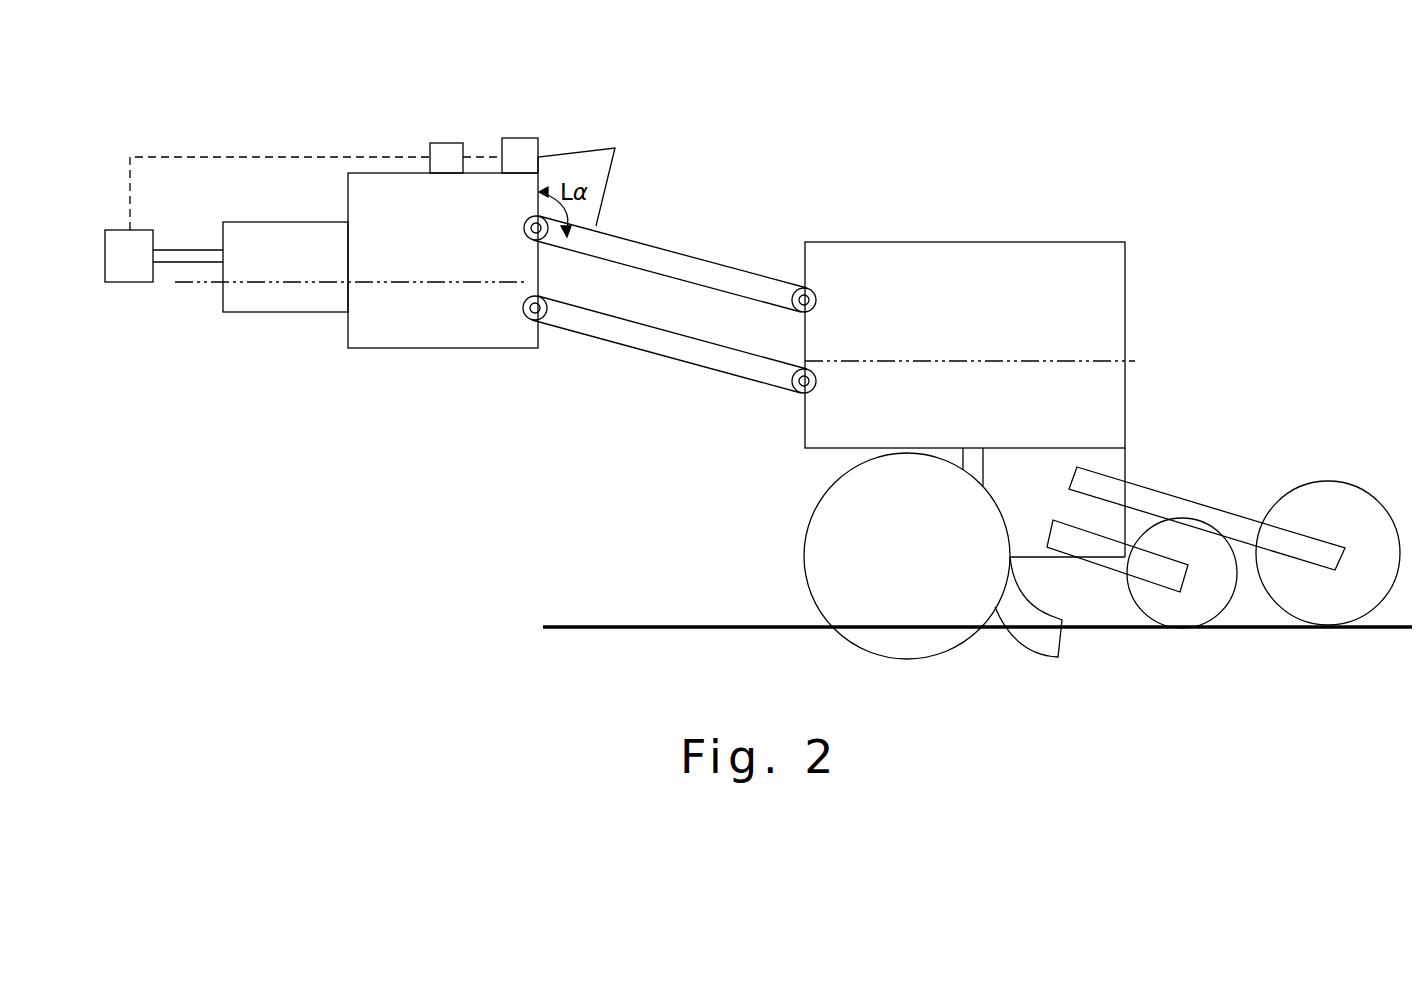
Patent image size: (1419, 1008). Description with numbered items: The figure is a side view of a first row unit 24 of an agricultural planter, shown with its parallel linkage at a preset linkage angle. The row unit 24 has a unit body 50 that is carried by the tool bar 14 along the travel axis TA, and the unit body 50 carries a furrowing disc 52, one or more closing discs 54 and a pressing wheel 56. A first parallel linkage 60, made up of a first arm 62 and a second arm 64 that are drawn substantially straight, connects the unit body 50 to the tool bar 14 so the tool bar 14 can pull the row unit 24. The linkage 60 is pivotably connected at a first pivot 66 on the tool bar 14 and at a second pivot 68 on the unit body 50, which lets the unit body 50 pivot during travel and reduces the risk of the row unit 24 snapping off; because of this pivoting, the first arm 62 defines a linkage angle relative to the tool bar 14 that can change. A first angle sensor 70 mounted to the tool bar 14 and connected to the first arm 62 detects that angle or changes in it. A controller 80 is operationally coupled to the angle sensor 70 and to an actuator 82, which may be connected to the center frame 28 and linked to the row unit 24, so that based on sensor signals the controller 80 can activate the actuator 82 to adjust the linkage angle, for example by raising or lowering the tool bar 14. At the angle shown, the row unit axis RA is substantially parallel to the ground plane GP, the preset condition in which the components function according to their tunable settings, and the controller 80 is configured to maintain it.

The tool bar 14 is at (415, 350).
The row unit 24 is at (1134, 178).
The center frame 28 is at (288, 221).
The unit body 50 is at (1110, 390).
The furrowing disc 52 is at (806, 545).
The closing discs 54 is at (1210, 608).
The pressing wheel 56 is at (1350, 500).
The first parallel linkage 60 is at (669, 282).
The first arm 62 is at (733, 275).
The second arm 64 is at (700, 362).
The first pivot 66 is at (535, 306).
The second pivot 68 is at (800, 375).
The first angle sensor 70 is at (517, 126).
The controller 80 is at (446, 142).
The actuator 82 is at (130, 284).
The travel axis TA is at (195, 286).
The row unit axis RA is at (967, 360).
The ground plane GP is at (610, 625).